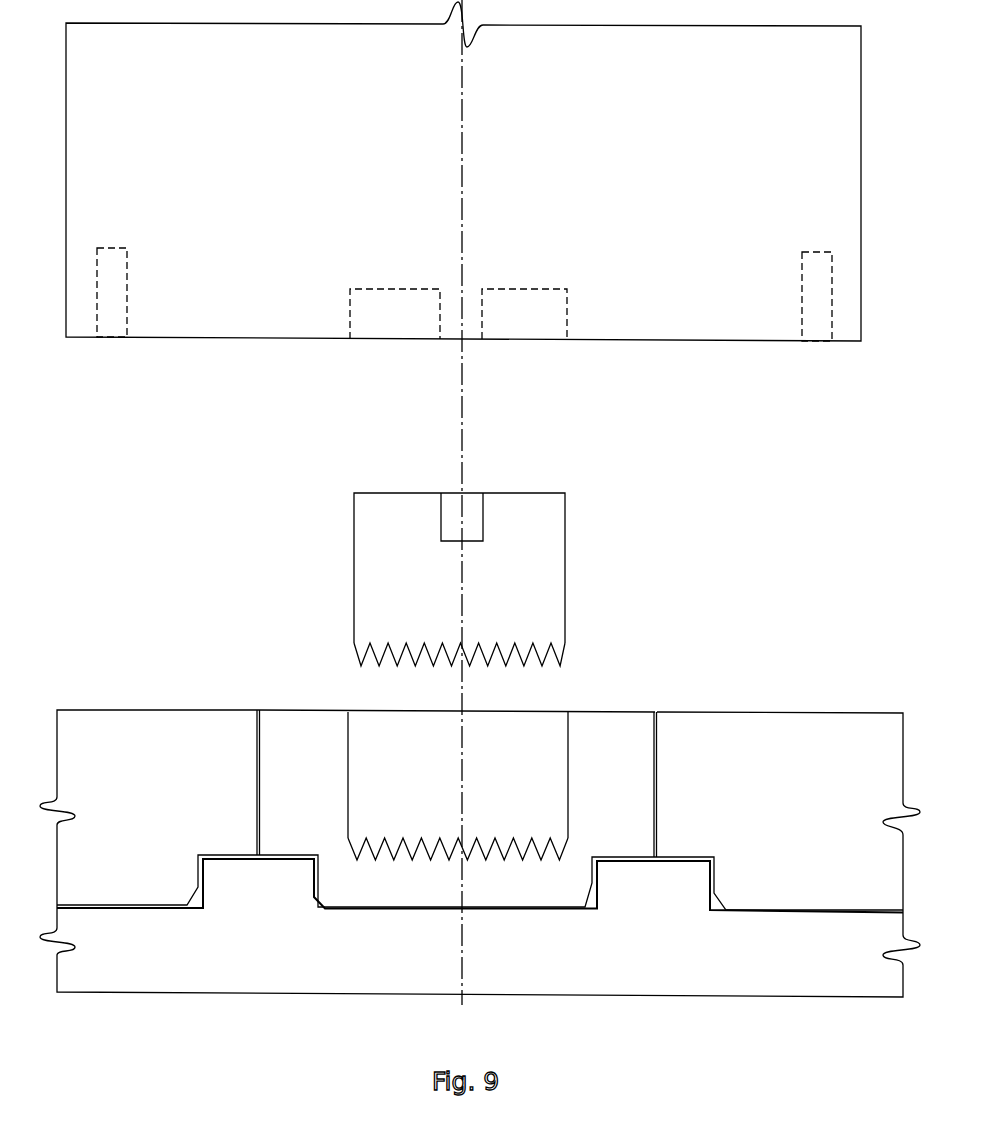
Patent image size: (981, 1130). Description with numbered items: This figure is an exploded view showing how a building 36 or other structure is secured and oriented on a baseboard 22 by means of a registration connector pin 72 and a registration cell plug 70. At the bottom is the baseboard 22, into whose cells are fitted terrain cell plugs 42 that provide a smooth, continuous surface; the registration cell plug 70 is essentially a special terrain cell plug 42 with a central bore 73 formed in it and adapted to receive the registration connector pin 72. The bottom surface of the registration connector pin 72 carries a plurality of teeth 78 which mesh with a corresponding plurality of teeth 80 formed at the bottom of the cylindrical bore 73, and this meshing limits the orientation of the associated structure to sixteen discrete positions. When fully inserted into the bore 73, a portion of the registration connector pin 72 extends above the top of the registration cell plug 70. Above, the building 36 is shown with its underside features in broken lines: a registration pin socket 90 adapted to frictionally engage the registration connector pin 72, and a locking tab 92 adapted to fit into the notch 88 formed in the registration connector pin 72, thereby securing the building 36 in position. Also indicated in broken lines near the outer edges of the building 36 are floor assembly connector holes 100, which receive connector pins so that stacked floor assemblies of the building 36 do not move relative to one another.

The baseboard 22 is at (693, 987).
The building 36 is at (463, 171).
The terrain cell plug 42 is at (113, 725).
The registration cell plug 70 is at (627, 730).
The registration connector pin 72 is at (564, 584).
The central bore 73 is at (555, 710).
The teeth 78 is at (428, 660).
The teeth 80 is at (418, 838).
The notch 88 is at (467, 497).
The registration pin socket 90 is at (503, 330).
The locking tab 92 is at (453, 330).
The floor assembly connector hole 100 is at (112, 316).